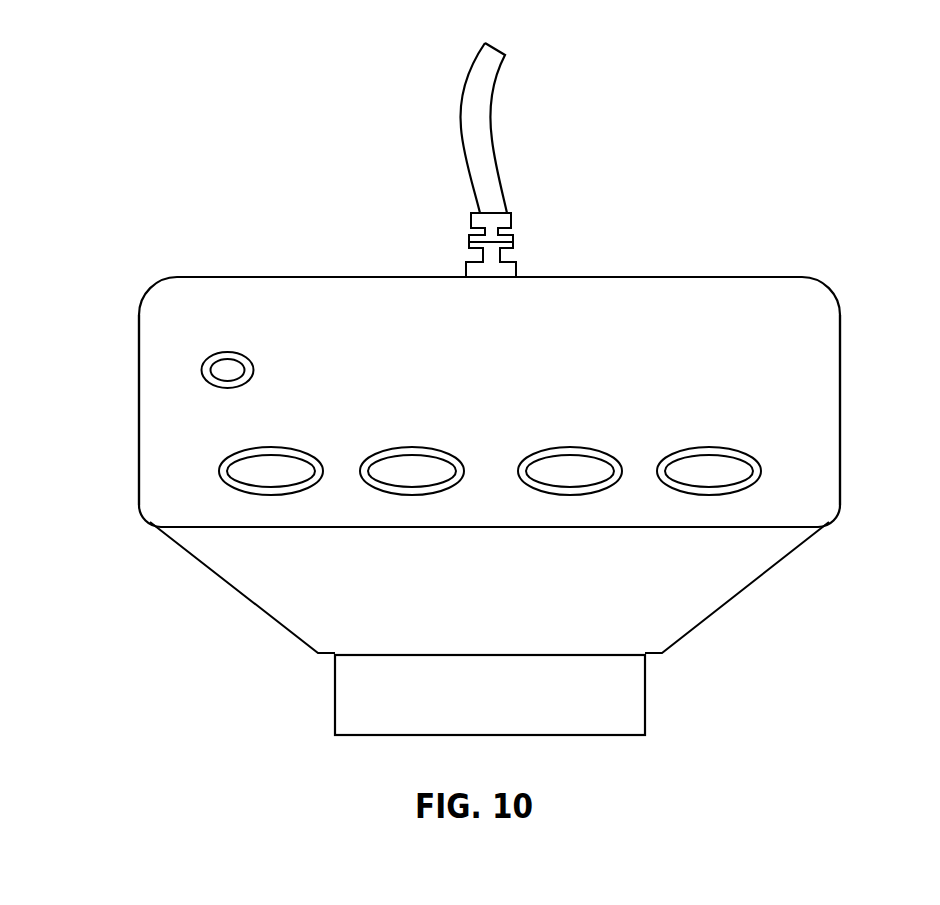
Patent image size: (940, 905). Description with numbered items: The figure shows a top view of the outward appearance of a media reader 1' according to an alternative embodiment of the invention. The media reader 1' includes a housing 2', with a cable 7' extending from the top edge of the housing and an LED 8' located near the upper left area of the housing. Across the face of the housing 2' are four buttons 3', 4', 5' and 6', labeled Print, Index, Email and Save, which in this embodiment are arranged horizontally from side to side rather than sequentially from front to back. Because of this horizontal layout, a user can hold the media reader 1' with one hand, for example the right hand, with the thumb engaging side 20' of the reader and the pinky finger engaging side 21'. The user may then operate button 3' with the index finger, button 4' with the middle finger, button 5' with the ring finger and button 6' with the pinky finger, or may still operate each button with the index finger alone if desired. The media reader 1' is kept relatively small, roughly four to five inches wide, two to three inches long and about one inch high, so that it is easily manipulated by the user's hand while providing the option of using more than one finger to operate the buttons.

The media reader 1' is at (453, 498).
The housing 2' is at (489, 381).
The button 3' is at (273, 468).
The button 4' is at (414, 468).
The button 5' is at (572, 468).
The button 6' is at (711, 468).
The cable 7' is at (512, 160).
The LED 8' is at (248, 360).
The side 20' is at (102, 410).
The side 21' is at (873, 410).